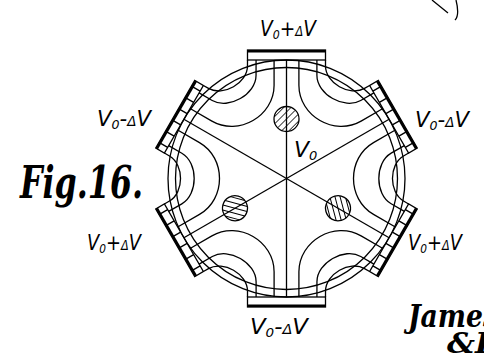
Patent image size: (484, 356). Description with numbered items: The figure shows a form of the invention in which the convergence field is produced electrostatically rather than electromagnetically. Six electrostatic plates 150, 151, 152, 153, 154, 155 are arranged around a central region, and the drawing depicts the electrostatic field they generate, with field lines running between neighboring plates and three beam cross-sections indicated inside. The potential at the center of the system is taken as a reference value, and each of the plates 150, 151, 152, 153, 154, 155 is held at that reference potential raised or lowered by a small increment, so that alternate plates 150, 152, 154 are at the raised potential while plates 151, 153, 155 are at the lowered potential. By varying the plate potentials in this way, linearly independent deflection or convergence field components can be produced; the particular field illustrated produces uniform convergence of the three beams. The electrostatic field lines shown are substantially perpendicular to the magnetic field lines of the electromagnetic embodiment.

The electrostatic plate 150 is at (249, 52).
The electrostatic plate 151 is at (386, 69).
The electrostatic plate 152 is at (412, 207).
The electrostatic plate 153 is at (326, 302).
The electrostatic plate 154 is at (194, 277).
The electrostatic plate 155 is at (198, 68).